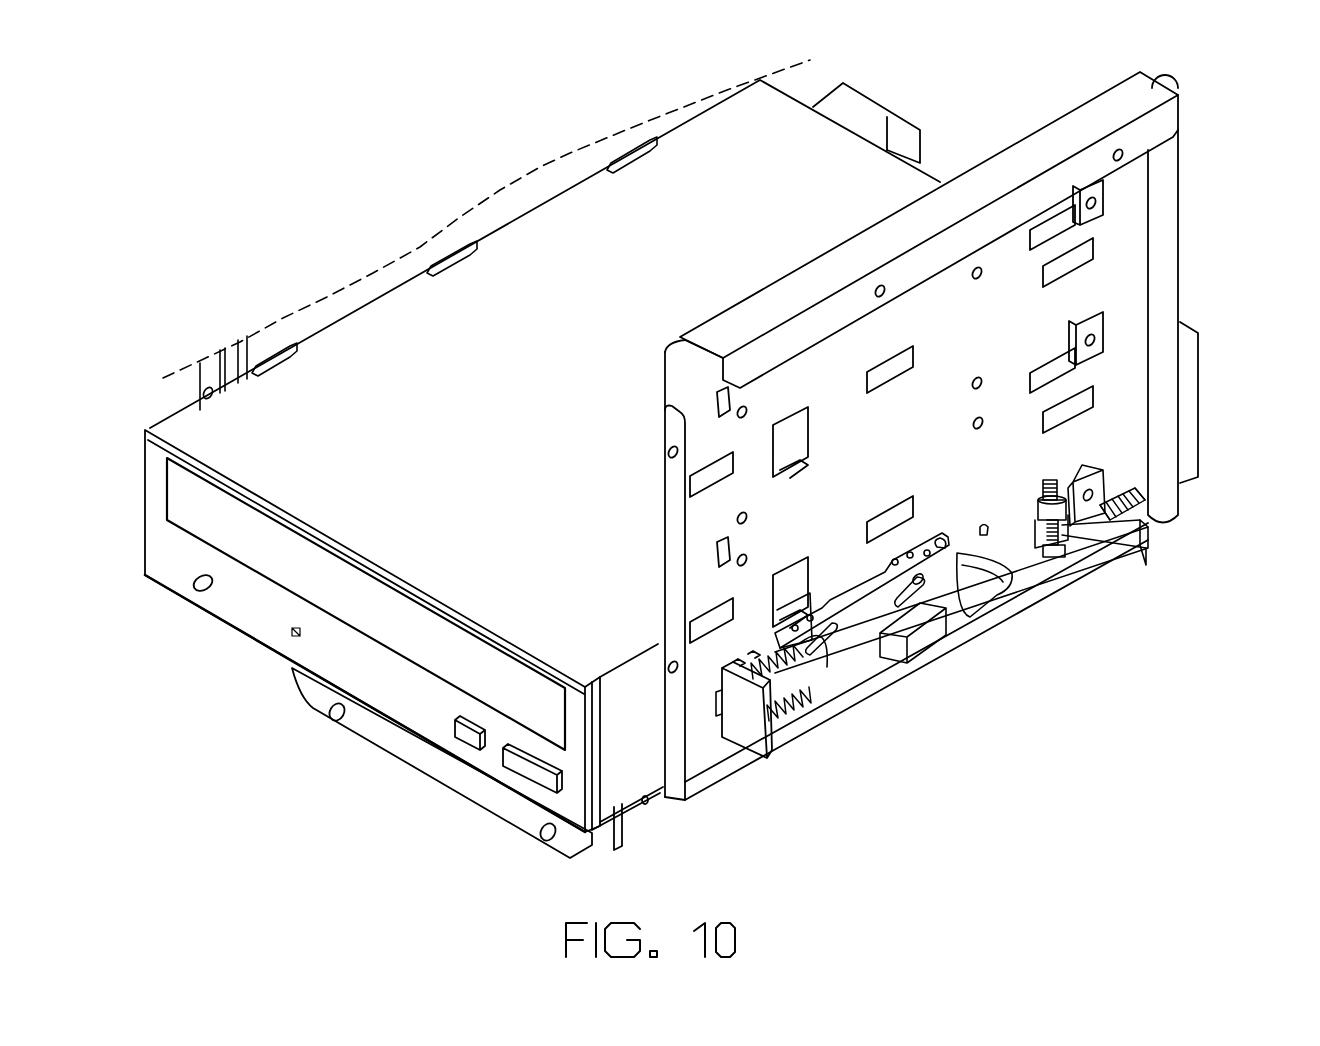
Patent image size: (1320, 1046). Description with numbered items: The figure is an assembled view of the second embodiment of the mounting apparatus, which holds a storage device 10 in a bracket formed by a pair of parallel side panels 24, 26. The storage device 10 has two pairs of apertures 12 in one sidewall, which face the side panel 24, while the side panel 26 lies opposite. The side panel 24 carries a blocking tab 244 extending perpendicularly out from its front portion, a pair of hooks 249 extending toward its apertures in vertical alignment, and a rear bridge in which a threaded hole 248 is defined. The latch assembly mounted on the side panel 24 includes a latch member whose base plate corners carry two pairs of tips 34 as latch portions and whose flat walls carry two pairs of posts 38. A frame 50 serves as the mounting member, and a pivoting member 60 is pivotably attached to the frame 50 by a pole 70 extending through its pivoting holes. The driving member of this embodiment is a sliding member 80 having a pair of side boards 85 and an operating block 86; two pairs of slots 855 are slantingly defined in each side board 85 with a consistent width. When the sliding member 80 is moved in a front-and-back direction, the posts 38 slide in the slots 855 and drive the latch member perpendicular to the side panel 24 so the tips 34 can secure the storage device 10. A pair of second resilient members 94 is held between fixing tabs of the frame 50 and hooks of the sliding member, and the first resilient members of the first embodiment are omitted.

The storage device 10 is at (180, 560).
The side panel 26 is at (360, 303).
The side panel 24 is at (1128, 293).
The pole 70 is at (1050, 480).
The threaded hole 248 is at (1090, 494).
The pivoting member 60 is at (1058, 532).
The tips 34 is at (1048, 543).
The apertures 12 is at (1005, 548).
The side boards 85 is at (937, 550).
The slots 855 is at (937, 552).
The operating block 86 is at (928, 637).
The posts 38 is at (862, 640).
The sliding member 80 is at (858, 660).
The hooks 249 is at (830, 640).
The second resilient members 94 is at (798, 672).
The frame 50 is at (743, 732).
The blocking tab 244 is at (717, 706).